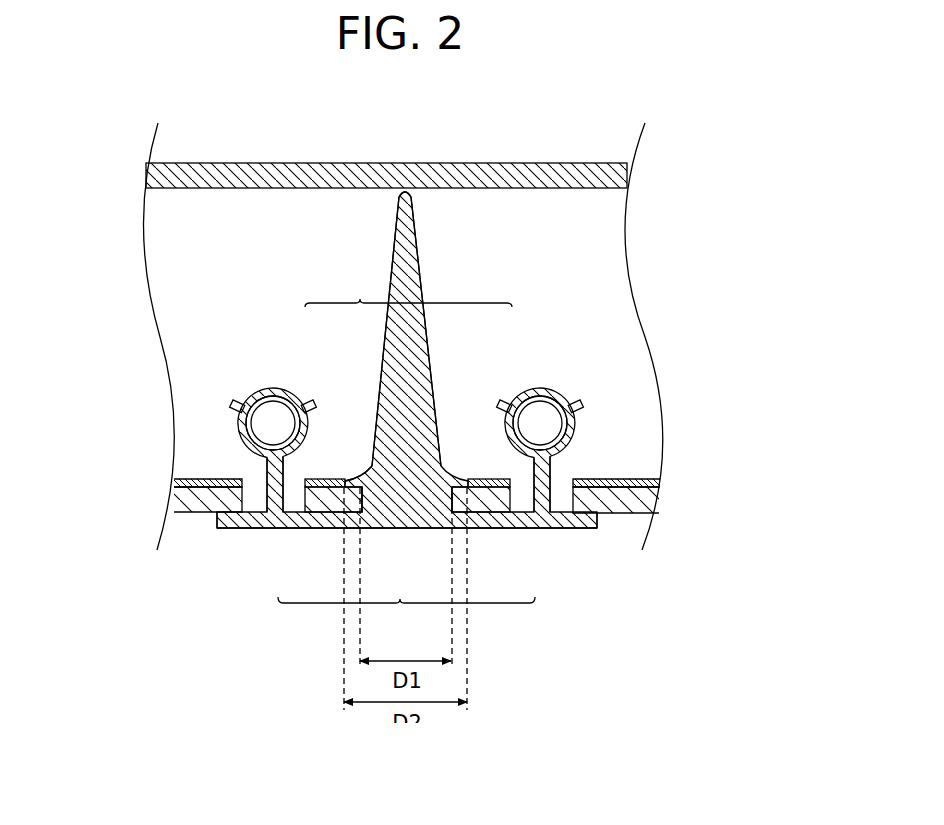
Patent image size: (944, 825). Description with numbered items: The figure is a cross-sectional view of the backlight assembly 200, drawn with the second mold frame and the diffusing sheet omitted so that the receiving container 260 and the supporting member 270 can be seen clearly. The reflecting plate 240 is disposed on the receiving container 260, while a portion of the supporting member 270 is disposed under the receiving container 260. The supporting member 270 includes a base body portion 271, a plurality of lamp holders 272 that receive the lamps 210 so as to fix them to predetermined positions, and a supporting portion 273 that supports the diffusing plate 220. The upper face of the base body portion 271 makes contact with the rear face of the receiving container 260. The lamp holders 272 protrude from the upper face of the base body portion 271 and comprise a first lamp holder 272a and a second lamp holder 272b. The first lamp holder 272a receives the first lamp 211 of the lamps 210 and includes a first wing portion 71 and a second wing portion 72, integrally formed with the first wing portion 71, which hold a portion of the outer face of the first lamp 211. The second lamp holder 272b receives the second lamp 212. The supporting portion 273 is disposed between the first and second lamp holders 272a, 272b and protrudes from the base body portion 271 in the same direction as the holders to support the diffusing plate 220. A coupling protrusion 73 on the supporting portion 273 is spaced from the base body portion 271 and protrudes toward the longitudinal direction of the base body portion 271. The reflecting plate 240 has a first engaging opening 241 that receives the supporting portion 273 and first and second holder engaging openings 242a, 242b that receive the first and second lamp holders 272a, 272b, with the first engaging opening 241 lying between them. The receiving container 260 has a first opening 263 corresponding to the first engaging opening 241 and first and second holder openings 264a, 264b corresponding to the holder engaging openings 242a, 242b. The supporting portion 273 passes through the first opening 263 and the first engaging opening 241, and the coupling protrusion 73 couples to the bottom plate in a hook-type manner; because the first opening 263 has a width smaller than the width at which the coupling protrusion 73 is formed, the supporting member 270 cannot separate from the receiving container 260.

The backlight assembly 200 is at (413, 107).
The diffusing plate 220 is at (618, 180).
The supporting member 270 is at (212, 538).
The supporting portion 273 is at (412, 263).
The coupling protrusion 73 is at (371, 470).
The first opening 263 is at (452, 503).
The base body portion 271 is at (552, 530).
The first holder opening 264a is at (238, 517).
The second holder opening 264b is at (597, 520).
The first lamp holder 272a is at (289, 462).
The second lamp holder 272b is at (516, 508).
The lamp holders 272 is at (406, 617).
The first holder engaging opening 242a is at (322, 512).
The second holder engaging opening 242b is at (487, 510).
The receiving container 260 is at (645, 501).
The reflecting plate 240 is at (657, 482).
The first engaging opening 241 is at (476, 479).
The lamps 210 is at (408, 291).
The first lamp 211 is at (297, 384).
The second lamp 212 is at (515, 384).
The first wing portion 71 is at (234, 407).
The second wing portion 72 is at (313, 407).